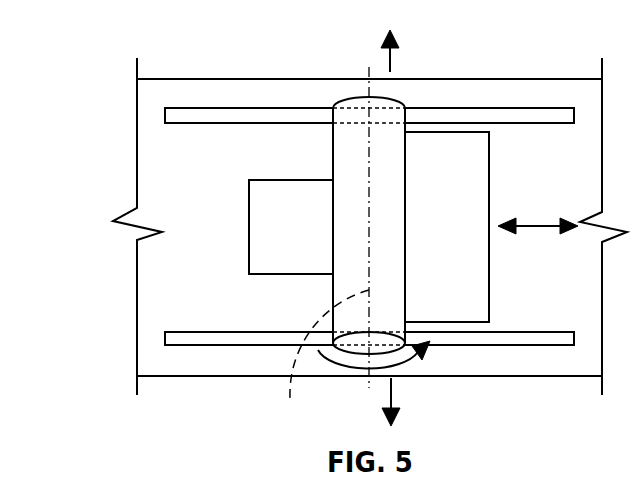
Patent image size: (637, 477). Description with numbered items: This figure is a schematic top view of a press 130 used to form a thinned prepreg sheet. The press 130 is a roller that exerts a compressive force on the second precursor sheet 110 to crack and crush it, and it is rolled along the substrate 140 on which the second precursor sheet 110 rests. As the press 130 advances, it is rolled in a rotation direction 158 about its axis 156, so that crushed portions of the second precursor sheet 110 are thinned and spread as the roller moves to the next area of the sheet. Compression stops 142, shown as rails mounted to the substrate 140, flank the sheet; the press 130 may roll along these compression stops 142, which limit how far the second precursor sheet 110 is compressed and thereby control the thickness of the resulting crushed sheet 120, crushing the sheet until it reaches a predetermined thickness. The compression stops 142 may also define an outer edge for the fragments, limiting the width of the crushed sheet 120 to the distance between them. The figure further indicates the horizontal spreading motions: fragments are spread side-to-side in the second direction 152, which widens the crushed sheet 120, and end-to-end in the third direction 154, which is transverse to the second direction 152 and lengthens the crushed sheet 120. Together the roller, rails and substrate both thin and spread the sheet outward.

The second precursor sheet 110 is at (256, 243).
The crushed sheet 120 is at (480, 270).
The press 130 is at (388, 148).
The substrate 140 is at (183, 365).
The compression stops 142 is at (233, 117).
The second direction 152 is at (388, 60).
The third direction 154 is at (540, 224).
The axis 156 is at (319, 362).
The rotation direction 158 is at (402, 363).